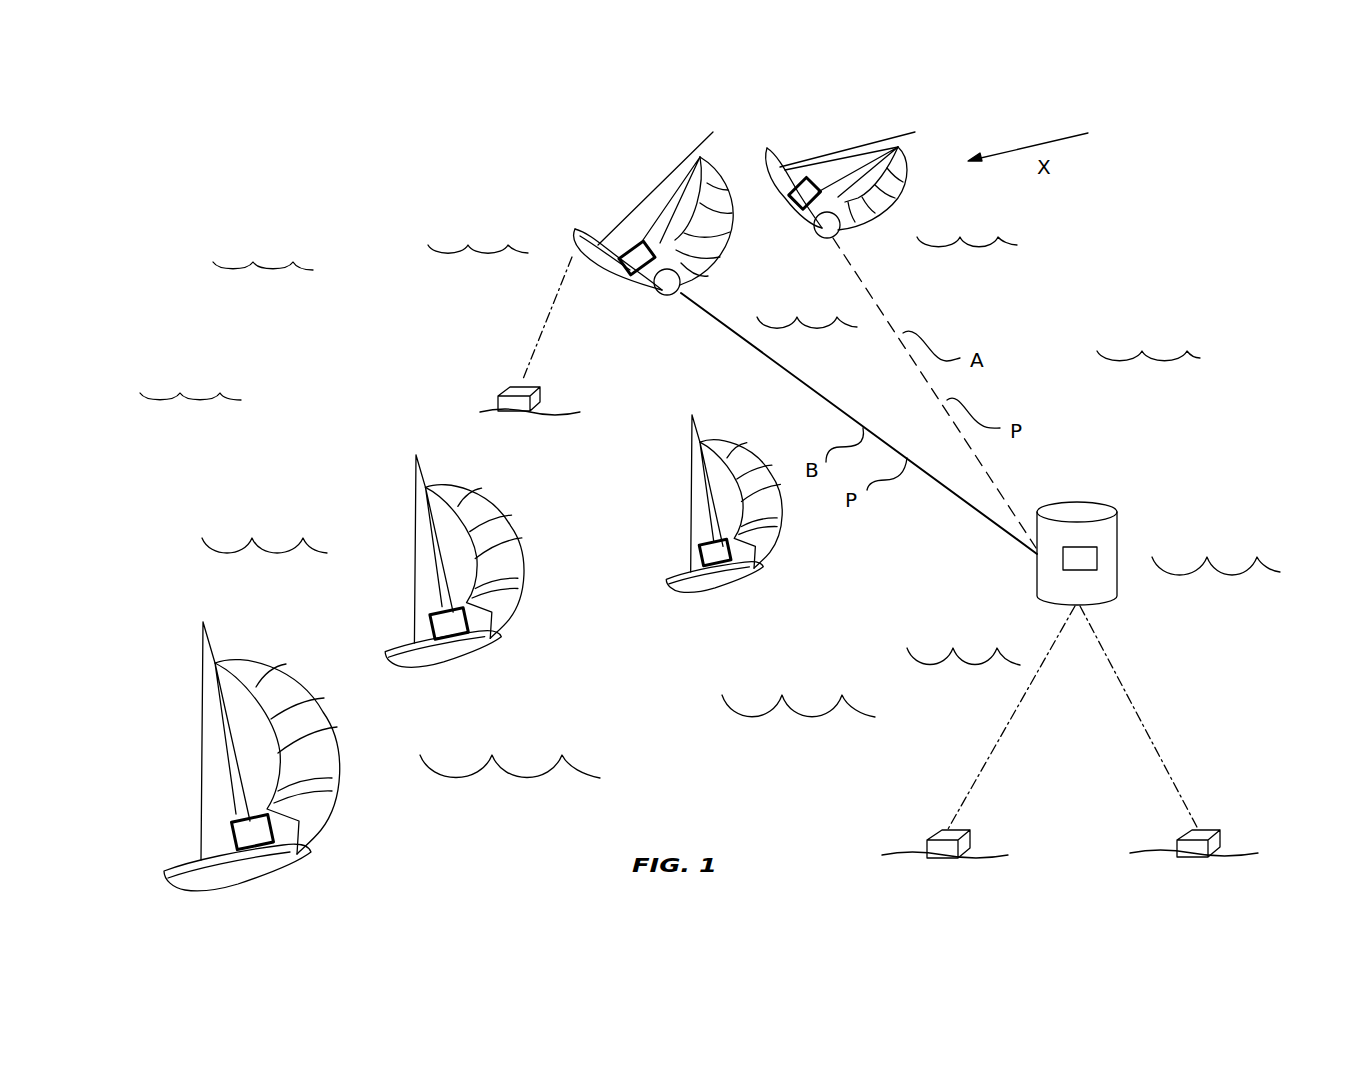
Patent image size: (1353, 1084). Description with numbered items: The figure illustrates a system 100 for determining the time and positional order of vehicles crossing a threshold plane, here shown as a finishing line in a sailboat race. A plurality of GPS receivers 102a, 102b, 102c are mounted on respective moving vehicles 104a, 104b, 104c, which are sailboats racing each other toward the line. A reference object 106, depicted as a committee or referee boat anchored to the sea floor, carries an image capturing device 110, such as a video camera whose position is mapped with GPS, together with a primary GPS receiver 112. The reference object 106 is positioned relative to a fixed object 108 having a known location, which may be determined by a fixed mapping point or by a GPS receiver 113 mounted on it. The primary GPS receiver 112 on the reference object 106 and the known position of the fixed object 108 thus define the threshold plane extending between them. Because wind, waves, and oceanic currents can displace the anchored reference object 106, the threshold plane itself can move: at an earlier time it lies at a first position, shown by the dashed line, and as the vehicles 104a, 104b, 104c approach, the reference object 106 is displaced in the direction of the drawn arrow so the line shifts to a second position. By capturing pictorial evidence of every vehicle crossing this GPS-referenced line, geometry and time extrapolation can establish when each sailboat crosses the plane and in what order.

The system 100 is at (282, 170).
The reference object 106 is at (627, 176).
The primary GPS receiver 112 is at (623, 279).
The image capturing device 110 is at (669, 297).
The moving vehicle 104a is at (664, 487).
The moving vehicle 104b is at (180, 686).
The moving vehicle 104c is at (380, 477).
The GPS receiver 102a is at (728, 552).
The GPS receiver 102b is at (273, 832).
The GPS receiver 102c is at (466, 622).
The fixed object 108 is at (1143, 513).
The GPS receiver 113 is at (1097, 558).